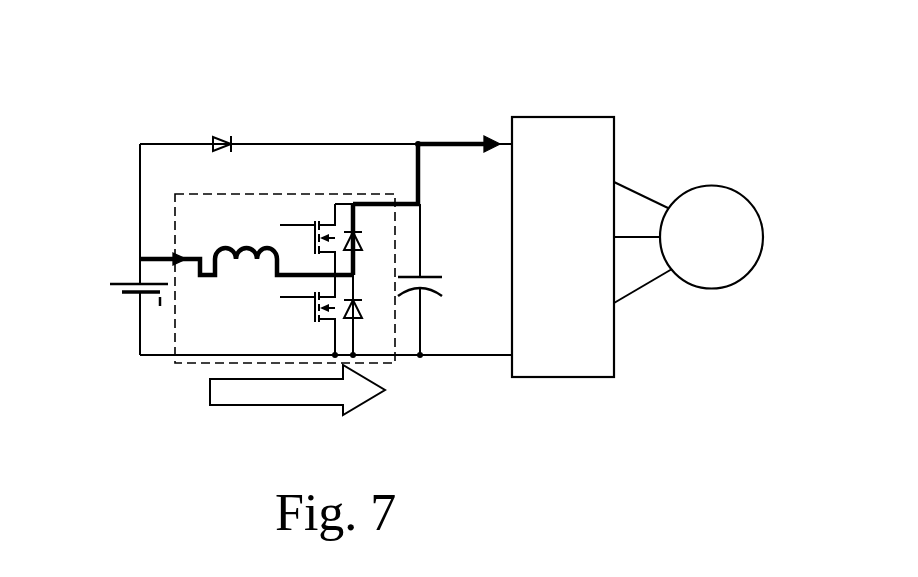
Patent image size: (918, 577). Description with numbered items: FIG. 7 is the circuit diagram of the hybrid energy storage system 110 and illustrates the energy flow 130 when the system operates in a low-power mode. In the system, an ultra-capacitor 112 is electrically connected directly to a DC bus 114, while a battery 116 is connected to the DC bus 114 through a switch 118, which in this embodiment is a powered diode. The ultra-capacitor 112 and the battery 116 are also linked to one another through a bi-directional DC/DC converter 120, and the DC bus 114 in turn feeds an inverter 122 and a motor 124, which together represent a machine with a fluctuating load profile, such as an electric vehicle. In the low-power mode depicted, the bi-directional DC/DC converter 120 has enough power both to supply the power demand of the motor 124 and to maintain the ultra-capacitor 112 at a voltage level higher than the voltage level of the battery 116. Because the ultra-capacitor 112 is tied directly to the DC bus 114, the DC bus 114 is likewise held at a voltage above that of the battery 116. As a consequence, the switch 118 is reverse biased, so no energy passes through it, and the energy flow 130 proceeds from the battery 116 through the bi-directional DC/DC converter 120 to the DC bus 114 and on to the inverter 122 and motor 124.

The hybrid energy storage system 110 is at (313, 110).
The ultra-capacitor 112 is at (415, 292).
The DC bus 114 is at (456, 141).
The battery 116 is at (125, 293).
The switch 118 is at (219, 139).
The bi-directional DC/DC converter 120 is at (178, 363).
The inverter 122 is at (588, 117).
The motor 124 is at (713, 188).
The energy flow 130 is at (421, 141).